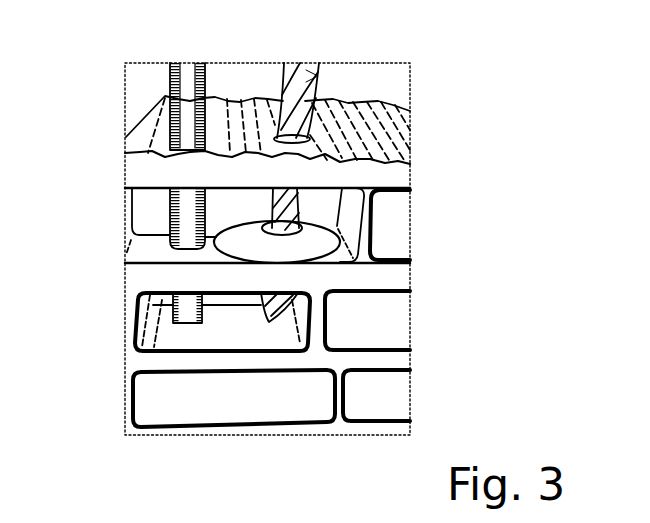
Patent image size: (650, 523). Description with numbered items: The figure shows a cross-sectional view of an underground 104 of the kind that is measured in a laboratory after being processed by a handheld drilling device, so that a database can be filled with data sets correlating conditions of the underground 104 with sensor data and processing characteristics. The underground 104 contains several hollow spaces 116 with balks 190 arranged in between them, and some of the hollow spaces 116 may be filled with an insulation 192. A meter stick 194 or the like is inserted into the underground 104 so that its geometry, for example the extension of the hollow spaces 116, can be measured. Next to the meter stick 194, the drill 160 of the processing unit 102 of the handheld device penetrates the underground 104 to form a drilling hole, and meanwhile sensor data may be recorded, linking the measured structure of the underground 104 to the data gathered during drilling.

The processing unit 102 is at (326, 83).
The underground 104 is at (512, 164).
The hollow spaces 116 is at (162, 202).
The drill 160 is at (300, 80).
The balks 190 is at (327, 167).
The insulation 192 is at (402, 222).
The meter stick 194 is at (188, 83).